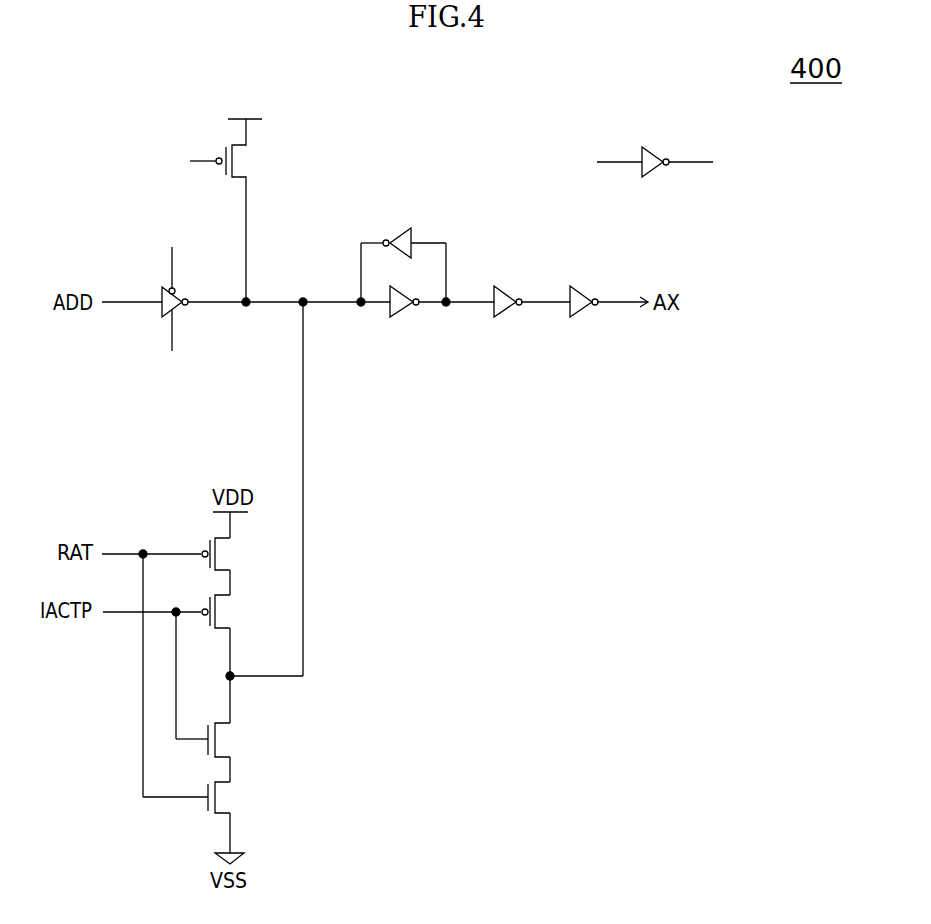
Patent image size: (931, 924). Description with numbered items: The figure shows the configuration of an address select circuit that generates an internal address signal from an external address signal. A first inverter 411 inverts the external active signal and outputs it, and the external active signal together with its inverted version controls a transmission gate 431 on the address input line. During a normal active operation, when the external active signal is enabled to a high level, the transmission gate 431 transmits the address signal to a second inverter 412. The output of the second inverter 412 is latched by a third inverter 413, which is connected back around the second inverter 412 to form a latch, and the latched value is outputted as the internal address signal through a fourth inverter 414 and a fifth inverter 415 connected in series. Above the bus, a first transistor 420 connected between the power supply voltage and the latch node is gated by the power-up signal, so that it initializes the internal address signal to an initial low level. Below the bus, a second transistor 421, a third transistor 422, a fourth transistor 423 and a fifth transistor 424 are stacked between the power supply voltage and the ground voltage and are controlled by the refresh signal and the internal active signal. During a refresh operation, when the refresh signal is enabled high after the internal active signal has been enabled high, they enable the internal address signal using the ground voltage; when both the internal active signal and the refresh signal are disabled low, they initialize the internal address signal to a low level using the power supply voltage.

The first inverter 411 is at (653, 153).
The second inverter 412 is at (409, 291).
The third inverter 413 is at (412, 235).
The fourth inverter 414 is at (513, 291).
The fifth inverter 415 is at (589, 291).
The first transistor 420 is at (243, 163).
The second transistor 421 is at (228, 556).
The third transistor 422 is at (228, 614).
The fourth transistor 423 is at (228, 741).
The fifth transistor 424 is at (228, 799).
The transmission gate 431 is at (187, 298).